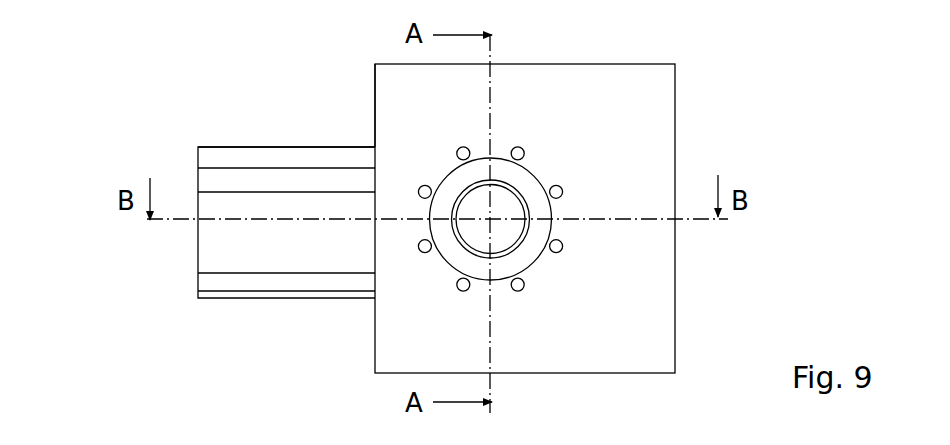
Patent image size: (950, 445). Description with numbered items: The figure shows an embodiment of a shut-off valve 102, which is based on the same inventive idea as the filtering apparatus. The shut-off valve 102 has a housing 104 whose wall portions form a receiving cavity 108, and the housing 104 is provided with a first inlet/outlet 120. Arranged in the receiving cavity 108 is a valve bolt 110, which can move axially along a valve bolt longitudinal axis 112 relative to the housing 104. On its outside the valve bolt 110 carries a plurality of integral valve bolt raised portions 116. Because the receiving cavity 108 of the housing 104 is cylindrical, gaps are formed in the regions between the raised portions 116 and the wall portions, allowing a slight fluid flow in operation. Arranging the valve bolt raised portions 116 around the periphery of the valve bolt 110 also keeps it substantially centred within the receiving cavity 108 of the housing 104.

The shut-off valve 102 is at (173, 110).
The housing 104 is at (643, 130).
The receiving cavity 108 is at (373, 145).
The valve bolt 110 is at (218, 255).
The valve bolt longitudinal axis 112 is at (177, 227).
The valve bolt raised portions 116 is at (238, 183).
The first inlet/outlet 120 is at (497, 215).